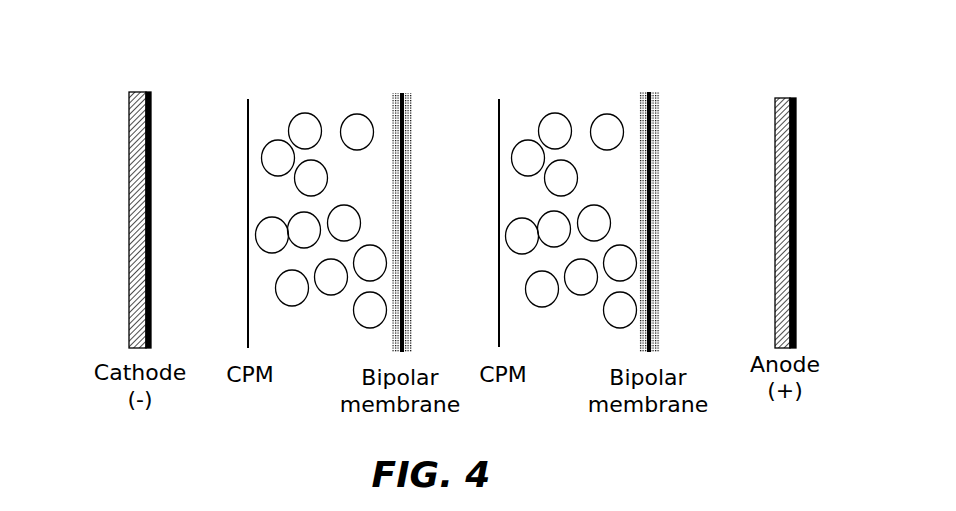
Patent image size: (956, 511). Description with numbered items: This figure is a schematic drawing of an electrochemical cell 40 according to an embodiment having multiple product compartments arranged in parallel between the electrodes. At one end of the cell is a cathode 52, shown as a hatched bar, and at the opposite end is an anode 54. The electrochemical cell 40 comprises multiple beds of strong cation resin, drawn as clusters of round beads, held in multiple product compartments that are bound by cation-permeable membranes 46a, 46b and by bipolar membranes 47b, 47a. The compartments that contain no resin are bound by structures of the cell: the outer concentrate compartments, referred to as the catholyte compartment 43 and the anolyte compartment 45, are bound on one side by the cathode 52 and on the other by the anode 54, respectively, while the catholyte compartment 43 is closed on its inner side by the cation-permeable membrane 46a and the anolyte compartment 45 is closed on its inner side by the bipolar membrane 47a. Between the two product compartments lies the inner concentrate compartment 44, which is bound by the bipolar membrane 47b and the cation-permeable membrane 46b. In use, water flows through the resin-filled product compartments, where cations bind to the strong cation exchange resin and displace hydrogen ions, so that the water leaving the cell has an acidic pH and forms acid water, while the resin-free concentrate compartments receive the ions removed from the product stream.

The electrochemical cell 40 is at (120, 163).
The catholyte compartment 43 is at (196, 105).
The concentrate compartment 44 is at (448, 105).
The anolyte compartment 45 is at (718, 105).
The cation-permeable membrane 46a is at (248, 198).
The cation-permeable membrane 46b is at (499, 172).
The bipolar membrane 47a is at (660, 238).
The bipolar membrane 47b is at (412, 238).
The cathode 52 is at (129, 281).
The anode 54 is at (796, 238).